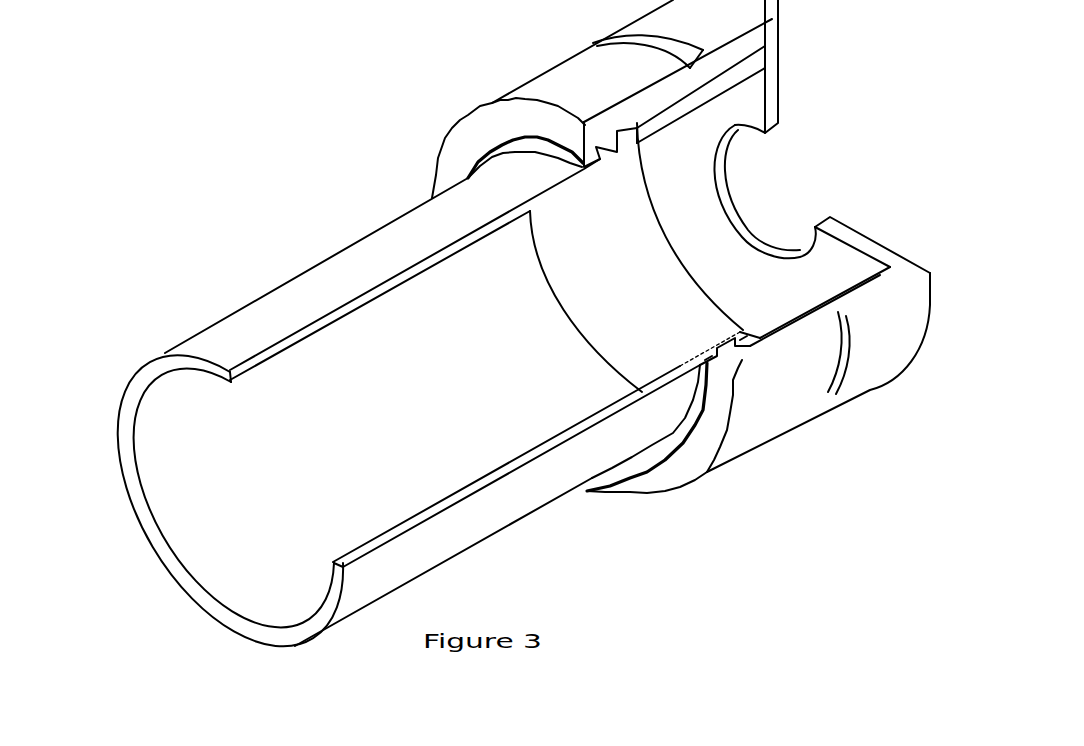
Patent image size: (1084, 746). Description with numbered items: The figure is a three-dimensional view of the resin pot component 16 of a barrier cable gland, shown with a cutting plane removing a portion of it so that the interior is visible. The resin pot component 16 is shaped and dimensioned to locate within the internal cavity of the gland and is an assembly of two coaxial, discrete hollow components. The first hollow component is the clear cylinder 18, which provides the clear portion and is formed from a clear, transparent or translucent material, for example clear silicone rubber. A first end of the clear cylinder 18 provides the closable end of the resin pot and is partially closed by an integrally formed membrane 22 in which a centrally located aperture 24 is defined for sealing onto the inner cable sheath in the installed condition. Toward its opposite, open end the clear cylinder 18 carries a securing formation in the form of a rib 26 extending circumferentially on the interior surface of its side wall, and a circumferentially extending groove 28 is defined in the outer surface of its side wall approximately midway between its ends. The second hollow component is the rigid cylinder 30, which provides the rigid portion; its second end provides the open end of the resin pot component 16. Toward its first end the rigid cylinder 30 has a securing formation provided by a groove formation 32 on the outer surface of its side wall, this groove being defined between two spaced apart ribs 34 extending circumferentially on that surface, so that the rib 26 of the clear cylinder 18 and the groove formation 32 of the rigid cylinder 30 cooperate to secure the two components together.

The resin pot component 16 is at (143, 566).
The clear cylinder 18 is at (727, 486).
The membrane 22 is at (833, 258).
The aperture 24 is at (786, 184).
The rib 26 is at (596, 146).
The groove 28 is at (829, 386).
The rigid cylinder 30 is at (510, 555).
The groove formation 32 is at (727, 350).
The ribs 34 is at (733, 353).